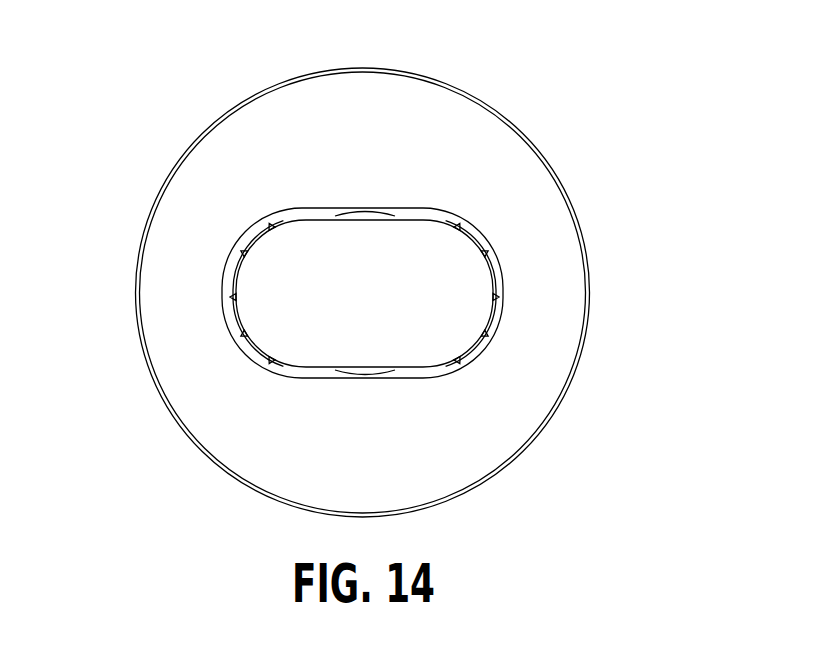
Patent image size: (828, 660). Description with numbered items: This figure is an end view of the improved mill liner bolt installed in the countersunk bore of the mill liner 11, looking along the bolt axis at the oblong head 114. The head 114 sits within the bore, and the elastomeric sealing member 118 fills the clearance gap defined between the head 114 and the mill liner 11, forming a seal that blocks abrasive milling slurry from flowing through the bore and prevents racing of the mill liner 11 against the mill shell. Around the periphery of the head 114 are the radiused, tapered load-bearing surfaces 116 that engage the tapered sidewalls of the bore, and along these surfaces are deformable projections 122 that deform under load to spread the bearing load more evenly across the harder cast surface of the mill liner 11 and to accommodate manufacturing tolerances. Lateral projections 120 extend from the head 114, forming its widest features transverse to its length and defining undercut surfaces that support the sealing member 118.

The mill liner 11 is at (475, 140).
The head 114 is at (460, 300).
The tapered load-bearing surfaces 116 is at (262, 243).
The elastomeric sealing member 118 is at (365, 212).
The lateral projections 120 is at (365, 378).
The deformable projections 122 is at (493, 250).